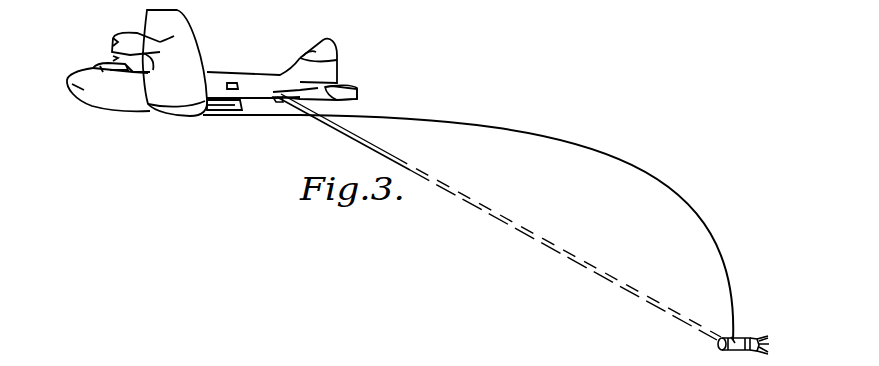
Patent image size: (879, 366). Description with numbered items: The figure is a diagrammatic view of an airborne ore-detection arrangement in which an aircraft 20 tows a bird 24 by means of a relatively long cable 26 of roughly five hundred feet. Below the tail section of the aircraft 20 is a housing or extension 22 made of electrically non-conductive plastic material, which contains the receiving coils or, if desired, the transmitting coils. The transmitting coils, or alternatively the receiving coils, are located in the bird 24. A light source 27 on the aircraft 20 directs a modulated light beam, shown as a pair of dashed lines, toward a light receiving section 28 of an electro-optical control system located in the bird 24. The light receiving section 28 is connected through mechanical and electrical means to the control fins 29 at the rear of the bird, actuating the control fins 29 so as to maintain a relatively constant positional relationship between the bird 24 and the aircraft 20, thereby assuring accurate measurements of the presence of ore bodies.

The aircraft 20 is at (138, 110).
The housing or extension 22 is at (357, 92).
The bird 24 is at (718, 350).
The cable 26 is at (650, 172).
The light source 27 is at (280, 103).
The light receiving section 28 is at (722, 338).
The control fins 29 is at (762, 346).